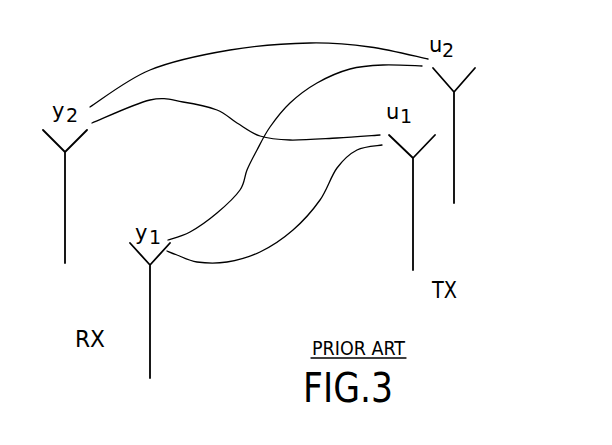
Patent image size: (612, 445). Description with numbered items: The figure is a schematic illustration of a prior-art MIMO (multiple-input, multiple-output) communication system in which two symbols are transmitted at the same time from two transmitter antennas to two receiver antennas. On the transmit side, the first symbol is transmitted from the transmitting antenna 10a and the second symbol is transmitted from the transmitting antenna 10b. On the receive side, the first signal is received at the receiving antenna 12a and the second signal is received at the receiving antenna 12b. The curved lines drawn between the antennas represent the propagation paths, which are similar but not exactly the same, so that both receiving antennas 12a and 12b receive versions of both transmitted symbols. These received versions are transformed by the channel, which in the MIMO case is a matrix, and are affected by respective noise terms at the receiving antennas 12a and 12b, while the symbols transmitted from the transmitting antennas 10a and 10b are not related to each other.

The receiving antenna 12b is at (65, 195).
The receiving antenna 12a is at (150, 309).
The transmitting antenna 10a is at (413, 200).
The transmitting antenna 10b is at (455, 135).